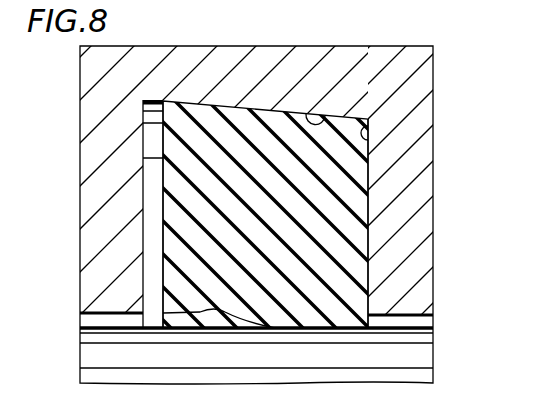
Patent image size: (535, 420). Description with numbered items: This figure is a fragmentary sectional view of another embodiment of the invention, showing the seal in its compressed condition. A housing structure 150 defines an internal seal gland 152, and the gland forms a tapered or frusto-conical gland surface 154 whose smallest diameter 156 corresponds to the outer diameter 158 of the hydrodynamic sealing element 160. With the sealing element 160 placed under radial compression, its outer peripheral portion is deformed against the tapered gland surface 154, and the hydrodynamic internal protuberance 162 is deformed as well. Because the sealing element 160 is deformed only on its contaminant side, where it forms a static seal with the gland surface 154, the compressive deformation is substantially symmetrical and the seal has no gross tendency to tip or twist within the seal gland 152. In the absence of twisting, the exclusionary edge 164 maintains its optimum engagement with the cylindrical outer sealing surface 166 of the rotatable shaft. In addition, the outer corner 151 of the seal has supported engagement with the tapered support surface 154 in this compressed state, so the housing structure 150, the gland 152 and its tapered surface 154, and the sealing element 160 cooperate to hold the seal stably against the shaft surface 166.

The housing structure 150 is at (258, 64).
The outer corner 151 is at (162, 99).
The internal seal gland 152 is at (154, 322).
The tapered gland surface 154 is at (308, 113).
The smallest diameter 156 is at (370, 145).
The outer diameter 158 is at (369, 118).
The hydrodynamic sealing element 160 is at (213, 274).
The hydrodynamic internal protuberance 162 is at (327, 302).
The exclusionary edge 164 is at (370, 330).
The cylindrical outer sealing surface 166 is at (417, 327).